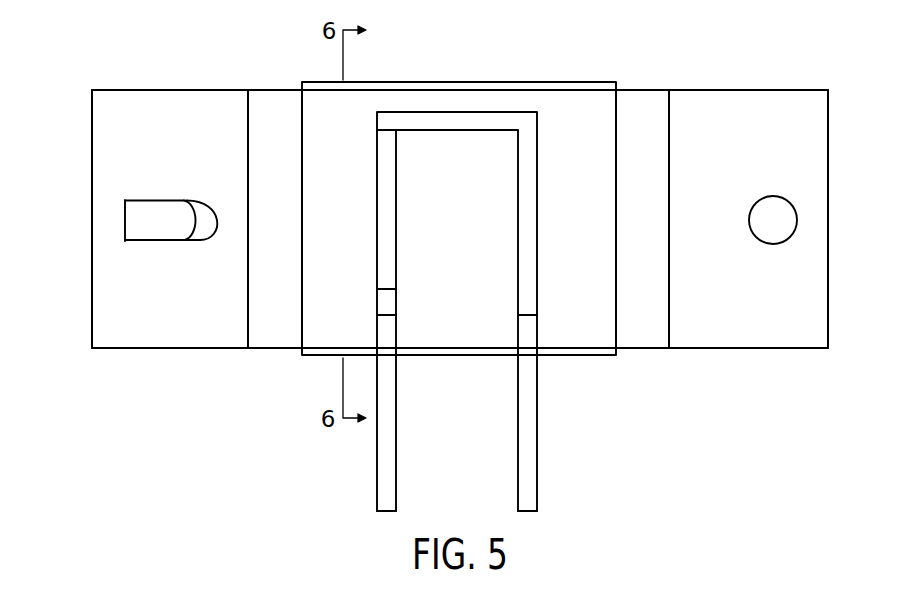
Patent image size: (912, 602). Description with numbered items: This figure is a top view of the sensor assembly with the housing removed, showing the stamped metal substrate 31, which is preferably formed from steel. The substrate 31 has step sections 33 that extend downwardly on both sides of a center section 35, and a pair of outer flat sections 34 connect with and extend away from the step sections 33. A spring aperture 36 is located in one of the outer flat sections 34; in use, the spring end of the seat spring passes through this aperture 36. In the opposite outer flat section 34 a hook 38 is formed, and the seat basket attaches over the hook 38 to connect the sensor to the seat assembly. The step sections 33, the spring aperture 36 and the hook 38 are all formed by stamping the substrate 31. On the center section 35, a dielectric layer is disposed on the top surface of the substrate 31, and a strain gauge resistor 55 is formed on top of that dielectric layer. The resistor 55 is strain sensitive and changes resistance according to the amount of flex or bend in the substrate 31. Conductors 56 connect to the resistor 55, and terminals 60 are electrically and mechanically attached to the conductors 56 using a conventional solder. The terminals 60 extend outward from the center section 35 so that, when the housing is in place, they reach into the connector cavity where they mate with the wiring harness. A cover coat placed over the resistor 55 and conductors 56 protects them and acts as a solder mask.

The metal substrate 31 is at (92, 118).
The step sections 33 is at (260, 98).
The outer flat sections 34 is at (113, 100).
The center section 35 is at (443, 95).
The spring aperture 36 is at (783, 219).
The hook 38 is at (138, 224).
The strain gauge resistor 55 is at (392, 237).
The conductors 56 is at (387, 303).
The terminals 60 is at (392, 415).